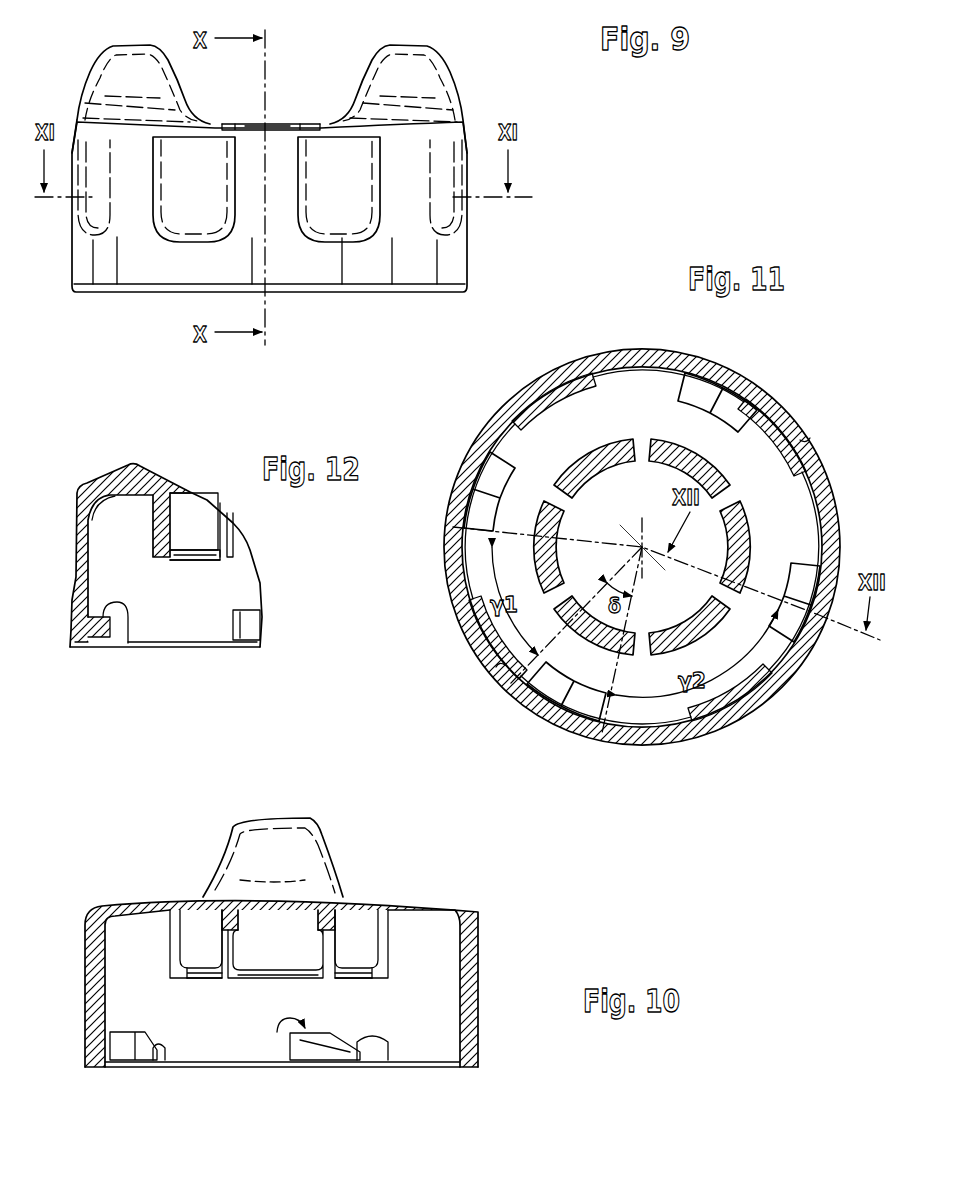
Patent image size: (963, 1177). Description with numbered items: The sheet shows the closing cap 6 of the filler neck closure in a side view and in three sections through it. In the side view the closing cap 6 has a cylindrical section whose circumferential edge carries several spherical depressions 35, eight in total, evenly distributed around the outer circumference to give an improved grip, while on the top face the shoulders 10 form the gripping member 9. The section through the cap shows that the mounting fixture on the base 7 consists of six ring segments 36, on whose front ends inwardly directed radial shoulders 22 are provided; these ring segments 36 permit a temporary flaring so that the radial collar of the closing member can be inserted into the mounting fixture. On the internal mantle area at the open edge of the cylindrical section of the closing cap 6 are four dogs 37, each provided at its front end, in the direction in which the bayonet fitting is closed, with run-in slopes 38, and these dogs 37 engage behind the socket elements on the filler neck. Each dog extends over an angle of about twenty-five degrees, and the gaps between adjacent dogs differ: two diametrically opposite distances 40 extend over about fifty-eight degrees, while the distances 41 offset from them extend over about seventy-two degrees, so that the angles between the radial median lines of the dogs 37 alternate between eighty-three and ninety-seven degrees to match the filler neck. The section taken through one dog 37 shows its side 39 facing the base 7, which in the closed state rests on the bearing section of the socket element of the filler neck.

In FIG. 9, the closing cap 6 is at (326, 68).
In FIG. 11, the closing cap 6 is at (632, 350).
In FIG. 12, the closing cap 6 is at (76, 603).
In FIG. 10, the closing cap 6 is at (472, 1005).
In FIG. 12, the base 7 is at (120, 500).
In FIG. 10, the base 7 is at (190, 905).
In FIG. 9, the gripping member 9 is at (470, 62).
In FIG. 9, the shoulders 10 is at (100, 85).
In FIG. 12, the radial shoulders 22 is at (167, 560).
In FIG. 10, the radial shoulders 22 is at (197, 980).
In FIG. 9, the spherical depressions 35 is at (190, 200).
In FIG. 11, the spherical depressions 35 is at (548, 385).
In FIG. 11, the ring segments 36 is at (612, 445).
In FIG. 12, the ring segments 36 is at (160, 507).
In FIG. 10, the ring segments 36 is at (177, 935).
In FIG. 11, the dogs 37 is at (738, 408).
In FIG. 12, the dogs 37 is at (103, 632).
In FIG. 10, the dogs 37 is at (118, 1045).
In FIG. 10, the run-in slopes 38 is at (163, 1052).
In FIG. 12, the side of the dog 39 is at (125, 623).
In FIG. 10, the side of the dog 39 is at (277, 1022).
In FIG. 11, the distances 40 is at (800, 440).
In FIG. 11, the distances 41 is at (525, 425).